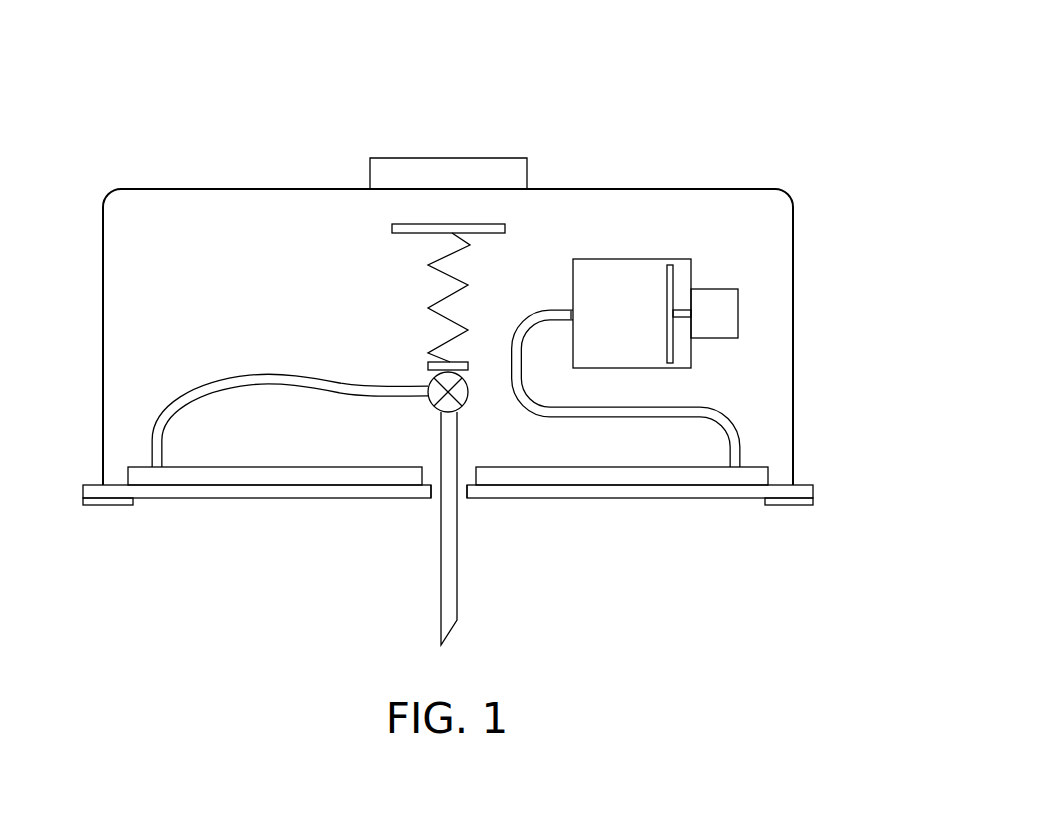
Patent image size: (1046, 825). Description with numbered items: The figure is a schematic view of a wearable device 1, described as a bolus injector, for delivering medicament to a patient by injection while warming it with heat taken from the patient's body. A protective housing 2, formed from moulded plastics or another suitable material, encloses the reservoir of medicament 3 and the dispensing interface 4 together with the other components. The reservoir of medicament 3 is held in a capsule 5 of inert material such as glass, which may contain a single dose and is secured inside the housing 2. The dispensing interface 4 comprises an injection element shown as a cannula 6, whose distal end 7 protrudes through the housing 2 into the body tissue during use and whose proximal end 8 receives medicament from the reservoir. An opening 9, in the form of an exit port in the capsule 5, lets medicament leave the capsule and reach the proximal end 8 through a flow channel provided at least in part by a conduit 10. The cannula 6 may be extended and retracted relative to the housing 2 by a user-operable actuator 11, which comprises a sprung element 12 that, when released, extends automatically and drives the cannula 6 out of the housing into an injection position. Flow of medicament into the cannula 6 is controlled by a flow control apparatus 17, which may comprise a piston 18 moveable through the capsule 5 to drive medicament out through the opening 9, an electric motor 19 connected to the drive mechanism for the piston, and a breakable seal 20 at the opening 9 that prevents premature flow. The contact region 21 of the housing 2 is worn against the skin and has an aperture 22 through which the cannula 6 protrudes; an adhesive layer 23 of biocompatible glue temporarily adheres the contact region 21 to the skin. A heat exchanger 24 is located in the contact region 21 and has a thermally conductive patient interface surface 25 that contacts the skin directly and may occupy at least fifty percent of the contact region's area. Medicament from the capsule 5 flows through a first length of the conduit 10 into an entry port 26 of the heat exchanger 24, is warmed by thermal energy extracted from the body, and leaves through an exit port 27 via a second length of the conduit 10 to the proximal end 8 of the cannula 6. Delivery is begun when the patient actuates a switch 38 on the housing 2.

The device 1 is at (463, 273).
The protective housing 2 is at (788, 192).
The reservoir of medicament 3 is at (624, 355).
The dispensing interface 4 is at (482, 523).
The capsule 5 is at (632, 259).
The cannula 6 is at (457, 567).
The distal end 7 is at (445, 638).
The proximal end 8 is at (457, 430).
The opening 9 is at (578, 316).
The conduit 10 is at (297, 375).
The user-operable actuator 11 is at (418, 297).
The sprung element 12 is at (466, 286).
The flow control apparatus 17 is at (667, 289).
The piston 18 is at (667, 272).
The electric motor 19 is at (703, 325).
The seal 20 is at (568, 311).
The contact region 21 is at (446, 535).
The aperture 22 is at (431, 499).
The adhesive layer 23 is at (107, 506).
The heat exchanger 24 is at (128, 470).
The patient interface surface 25 is at (242, 500).
The entry port 26 is at (741, 452).
The exit port 27 is at (152, 436).
The switch 38 is at (500, 158).